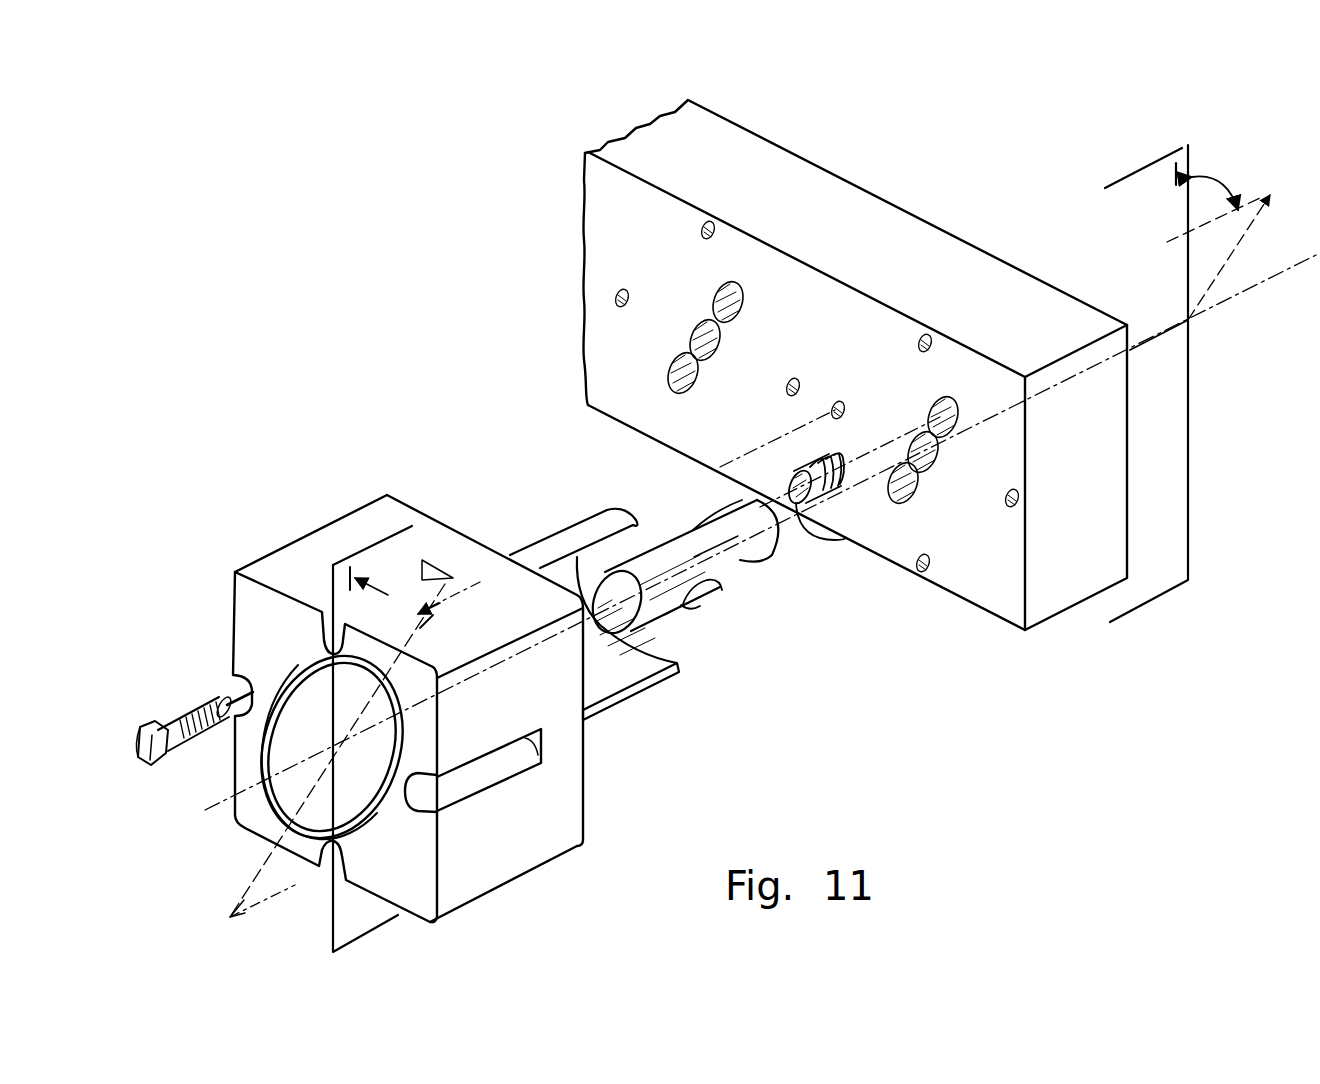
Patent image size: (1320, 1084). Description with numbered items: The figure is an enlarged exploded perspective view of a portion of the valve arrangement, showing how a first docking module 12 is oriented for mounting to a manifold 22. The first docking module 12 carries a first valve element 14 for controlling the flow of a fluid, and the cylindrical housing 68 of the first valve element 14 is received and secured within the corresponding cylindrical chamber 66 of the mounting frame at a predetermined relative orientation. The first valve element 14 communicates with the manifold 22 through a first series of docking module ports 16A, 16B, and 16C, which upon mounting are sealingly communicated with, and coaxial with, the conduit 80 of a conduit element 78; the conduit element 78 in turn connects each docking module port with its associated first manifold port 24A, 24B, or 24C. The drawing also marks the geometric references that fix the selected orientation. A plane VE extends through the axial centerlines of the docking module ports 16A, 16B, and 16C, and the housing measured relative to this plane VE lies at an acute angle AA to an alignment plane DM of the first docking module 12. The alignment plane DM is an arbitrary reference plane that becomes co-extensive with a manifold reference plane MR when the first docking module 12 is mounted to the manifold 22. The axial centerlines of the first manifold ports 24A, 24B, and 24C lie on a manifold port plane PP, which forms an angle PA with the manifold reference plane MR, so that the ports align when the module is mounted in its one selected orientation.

The first docking module 12 is at (578, 811).
The first valve element 14 is at (681, 600).
The first docking module port 16A is at (745, 505).
The first docking module port 16B is at (735, 558).
The first docking module port 16C is at (716, 598).
The manifold 22 is at (987, 582).
The first manifold port 24A is at (948, 400).
The first manifold port 24B is at (935, 462).
The first manifold port 24C is at (912, 502).
The cylindrical chamber 66 is at (636, 690).
The cylindrical housing 68 is at (373, 797).
The conduit element 78 is at (806, 458).
The conduit 80 is at (843, 538).
The alignment plane DM is at (385, 555).
The acute angle AA is at (390, 593).
The plane VE is at (452, 612).
The manifold reference plane MR is at (1153, 184).
The angle PA is at (1213, 188).
The manifold port plane PP is at (1213, 218).